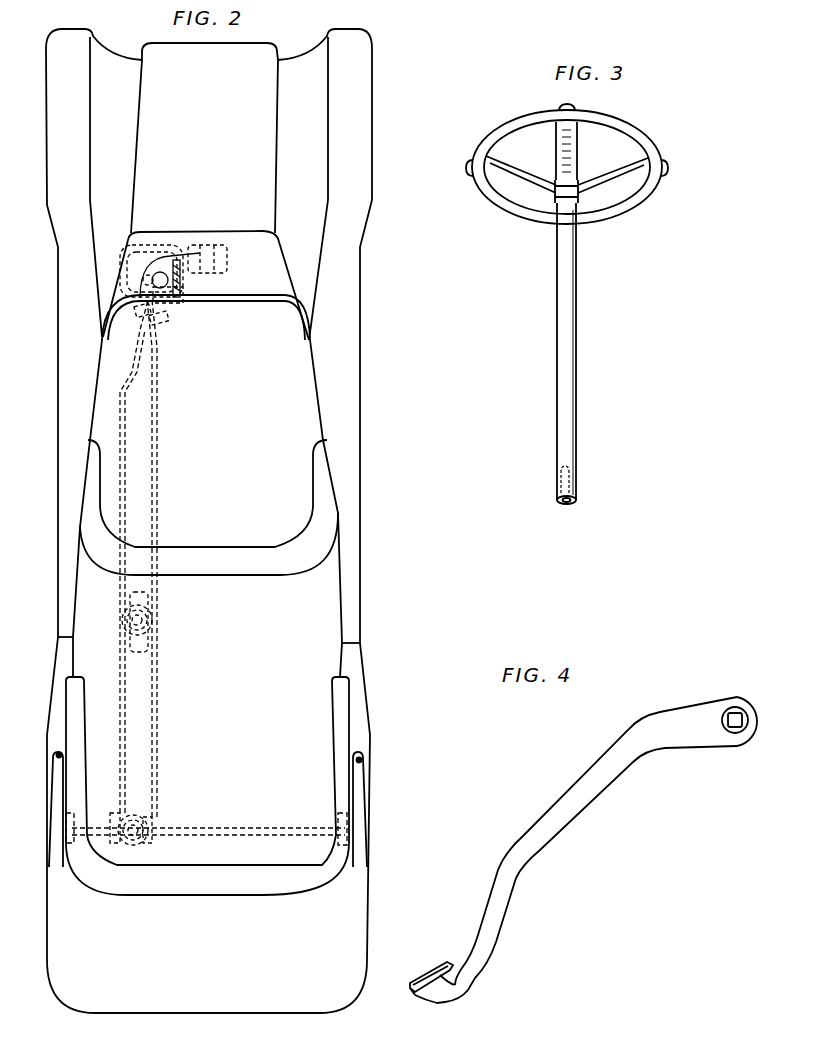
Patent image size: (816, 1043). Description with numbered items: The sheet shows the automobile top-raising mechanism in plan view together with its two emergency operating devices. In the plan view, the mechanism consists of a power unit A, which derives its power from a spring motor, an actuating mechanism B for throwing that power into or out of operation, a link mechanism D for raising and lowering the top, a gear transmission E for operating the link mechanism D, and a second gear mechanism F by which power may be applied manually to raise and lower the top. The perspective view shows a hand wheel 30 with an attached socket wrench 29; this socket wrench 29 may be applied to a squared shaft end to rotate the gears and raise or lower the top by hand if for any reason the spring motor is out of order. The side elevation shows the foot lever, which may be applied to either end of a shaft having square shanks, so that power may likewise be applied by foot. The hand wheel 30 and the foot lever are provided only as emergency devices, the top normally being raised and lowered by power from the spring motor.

In FIG. 2, the power unit A is at (133, 291).
In FIG. 2, the actuating mechanism B is at (180, 297).
In FIG. 2, the link mechanism D is at (70, 818).
In FIG. 2, the gear transmission E is at (135, 843).
In FIG. 2, the second gear mechanism F is at (150, 628).
In FIG. 3, the socket wrench 29 is at (573, 480).
In FIG. 3, the hand wheel 30 is at (631, 198).